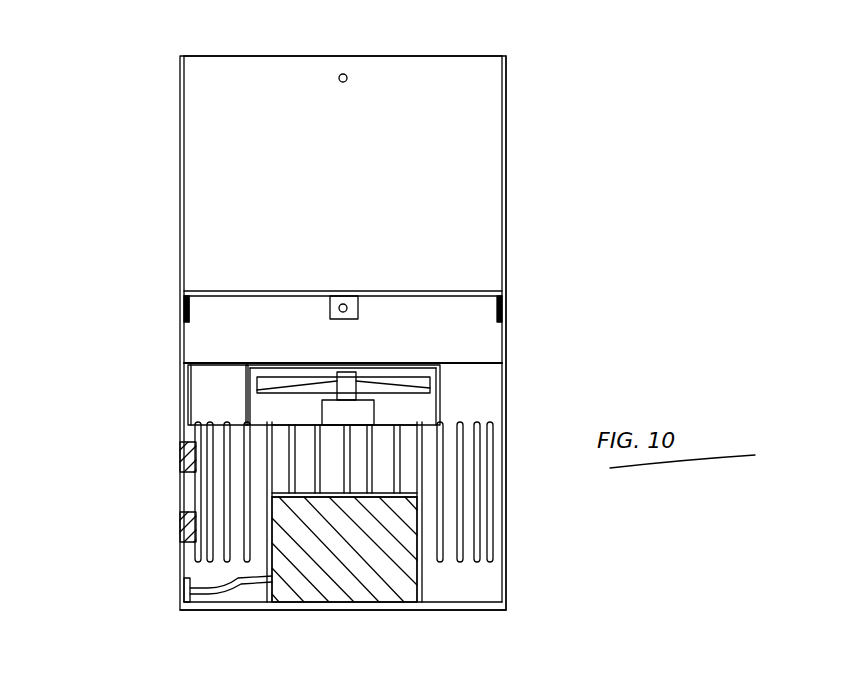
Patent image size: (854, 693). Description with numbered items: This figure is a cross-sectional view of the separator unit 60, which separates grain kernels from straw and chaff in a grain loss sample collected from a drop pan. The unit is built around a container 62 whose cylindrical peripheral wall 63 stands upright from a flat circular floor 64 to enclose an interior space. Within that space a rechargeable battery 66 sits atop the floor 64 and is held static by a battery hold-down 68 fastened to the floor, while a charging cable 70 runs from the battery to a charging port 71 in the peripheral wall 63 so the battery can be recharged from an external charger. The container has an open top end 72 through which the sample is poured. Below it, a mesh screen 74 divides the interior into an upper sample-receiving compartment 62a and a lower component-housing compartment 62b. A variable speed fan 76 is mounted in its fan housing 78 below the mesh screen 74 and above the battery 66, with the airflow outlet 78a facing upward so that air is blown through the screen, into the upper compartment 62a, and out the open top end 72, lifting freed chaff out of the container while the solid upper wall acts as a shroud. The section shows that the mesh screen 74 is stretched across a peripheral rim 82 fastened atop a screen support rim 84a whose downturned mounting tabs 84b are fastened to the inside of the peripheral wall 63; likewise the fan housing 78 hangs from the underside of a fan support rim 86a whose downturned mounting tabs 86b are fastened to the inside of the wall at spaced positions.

The separator unit 60 is at (580, 110).
The container 62 is at (512, 203).
The upper sample-receiving compartment 62a is at (228, 176).
The lower component-housing compartment 62b is at (478, 400).
The peripheral wall 63 is at (508, 248).
The floor 64 is at (472, 603).
The rechargeable battery 66 is at (380, 585).
The battery hold-down 68 is at (423, 578).
The charging cable 70 is at (237, 584).
The charging port 71 is at (185, 590).
The open top end 72 is at (470, 55).
The mesh screen 74 is at (283, 292).
The variable speed fan 76 is at (380, 373).
The fan housing 78 is at (246, 403).
The airflow outlet 78a is at (283, 362).
The peripheral rim 82 is at (190, 292).
The screen support rim 84a is at (193, 297).
The downturned mounting tabs 84b is at (353, 308).
The fan support rim 86a is at (485, 361).
The downturned mounting tabs 86b is at (190, 375).